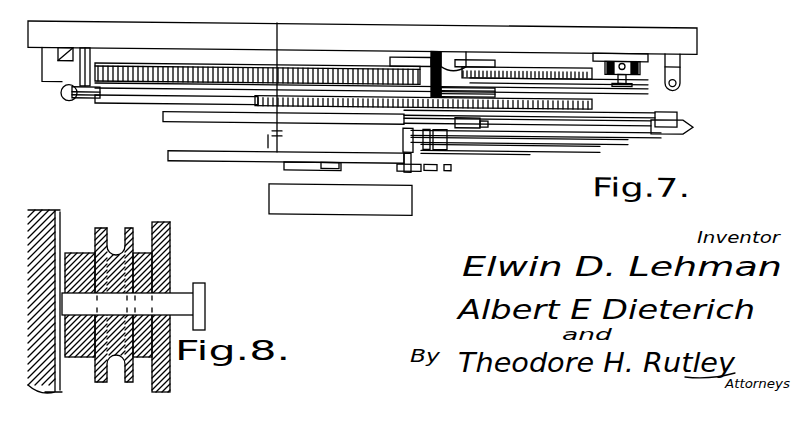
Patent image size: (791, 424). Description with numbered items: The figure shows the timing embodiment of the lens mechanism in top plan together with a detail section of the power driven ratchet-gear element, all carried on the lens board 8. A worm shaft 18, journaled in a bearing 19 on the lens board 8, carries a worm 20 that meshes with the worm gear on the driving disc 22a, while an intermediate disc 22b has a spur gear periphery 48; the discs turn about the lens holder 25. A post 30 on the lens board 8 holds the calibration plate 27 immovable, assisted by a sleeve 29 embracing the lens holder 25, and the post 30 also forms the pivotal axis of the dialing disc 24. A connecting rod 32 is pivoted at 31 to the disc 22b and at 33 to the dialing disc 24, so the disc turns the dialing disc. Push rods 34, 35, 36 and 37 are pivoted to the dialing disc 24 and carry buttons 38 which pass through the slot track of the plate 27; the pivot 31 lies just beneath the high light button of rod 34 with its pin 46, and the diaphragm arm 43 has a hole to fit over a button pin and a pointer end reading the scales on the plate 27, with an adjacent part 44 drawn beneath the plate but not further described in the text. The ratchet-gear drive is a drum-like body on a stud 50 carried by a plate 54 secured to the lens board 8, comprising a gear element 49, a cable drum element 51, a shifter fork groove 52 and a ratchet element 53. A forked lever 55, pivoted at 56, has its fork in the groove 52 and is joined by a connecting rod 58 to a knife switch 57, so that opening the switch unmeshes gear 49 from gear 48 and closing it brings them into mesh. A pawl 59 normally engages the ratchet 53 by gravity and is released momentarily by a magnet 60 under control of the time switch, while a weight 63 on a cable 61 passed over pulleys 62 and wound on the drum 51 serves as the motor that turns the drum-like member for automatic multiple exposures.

In FIG. 7, the lens board 8 is at (670, 33).
In FIG. 8, the lens board 8 is at (40, 358).
In FIG. 7, the worm shaft 18 is at (62, 86).
In FIG. 7, the bearing 19 is at (48, 82).
In FIG. 7, the worm 20 is at (66, 53).
In FIG. 7, the driving disc 22a is at (140, 63).
In FIG. 7, the intermediate disc 22b is at (113, 102).
In FIG. 7, the dialing disc 24 is at (197, 120).
In FIG. 7, the lens holder 25 is at (279, 198).
In FIG. 7, the calibration plate 27 is at (210, 159).
In FIG. 7, the sleeve 29 is at (266, 137).
In FIG. 7, the post 30 is at (397, 109).
In FIG. 7, the pivot 31 is at (380, 111).
In FIG. 7, the connecting rod 32 is at (643, 108).
In FIG. 7, the pivot 33 is at (688, 125).
In FIG. 7, the push rod 34 is at (677, 109).
In FIG. 7, the push rod 35 is at (605, 140).
In FIG. 7, the push rod 36 is at (491, 151).
In FIG. 7, the push rod 37 is at (661, 132).
In FIG. 7, the buttons 38 is at (449, 164).
In FIG. 7, the arm 43 is at (324, 165).
In FIG. 7, the block 44 is at (331, 167).
In FIG. 7, the high light button pin 46 is at (411, 166).
In FIG. 7, the spur gear periphery 48 is at (596, 97).
In FIG. 7, the gear element 49 is at (530, 123).
In FIG. 8, the gear element 49 is at (170, 224).
In FIG. 7, the stud 50 is at (482, 123).
In FIG. 8, the stud 50 is at (205, 296).
In FIG. 7, the cable drum element 51 is at (533, 61).
In FIG. 8, the cable drum element 51 is at (143, 252).
In FIG. 8, the shifter fork groove 52 is at (117, 233).
In FIG. 7, the ratchet element 53 is at (466, 62).
In FIG. 8, the ratchet element 53 is at (78, 260).
In FIG. 7, the plate 54 is at (462, 51).
In FIG. 8, the plate 54 is at (60, 210).
In FIG. 7, the forked lever 55 is at (645, 81).
In FIG. 7, the pivot 56 is at (678, 76).
In FIG. 7, the knife switch 57 is at (645, 55).
In FIG. 7, the connecting rod 58 is at (660, 66).
In FIG. 7, the pawl 59 is at (462, 54).
In FIG. 7, the magnet 60 is at (437, 47).
In FIG. 7, the cable 61 is at (272, 77).
In FIG. 7, the pulleys 62 is at (84, 99).
In FIG. 7, the weight 63 is at (72, 100).